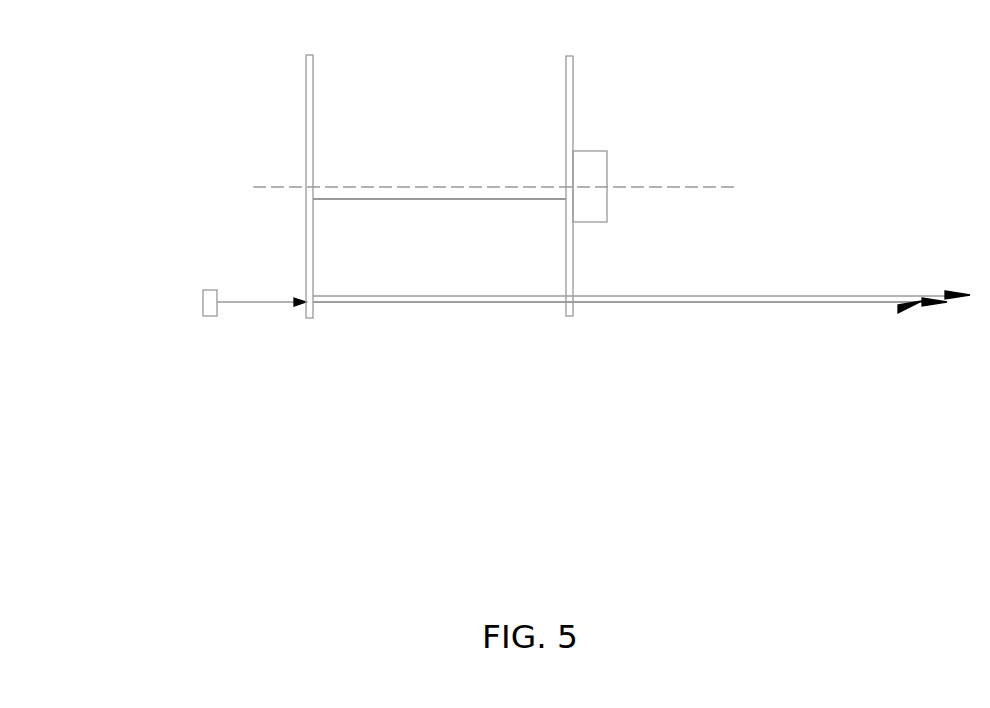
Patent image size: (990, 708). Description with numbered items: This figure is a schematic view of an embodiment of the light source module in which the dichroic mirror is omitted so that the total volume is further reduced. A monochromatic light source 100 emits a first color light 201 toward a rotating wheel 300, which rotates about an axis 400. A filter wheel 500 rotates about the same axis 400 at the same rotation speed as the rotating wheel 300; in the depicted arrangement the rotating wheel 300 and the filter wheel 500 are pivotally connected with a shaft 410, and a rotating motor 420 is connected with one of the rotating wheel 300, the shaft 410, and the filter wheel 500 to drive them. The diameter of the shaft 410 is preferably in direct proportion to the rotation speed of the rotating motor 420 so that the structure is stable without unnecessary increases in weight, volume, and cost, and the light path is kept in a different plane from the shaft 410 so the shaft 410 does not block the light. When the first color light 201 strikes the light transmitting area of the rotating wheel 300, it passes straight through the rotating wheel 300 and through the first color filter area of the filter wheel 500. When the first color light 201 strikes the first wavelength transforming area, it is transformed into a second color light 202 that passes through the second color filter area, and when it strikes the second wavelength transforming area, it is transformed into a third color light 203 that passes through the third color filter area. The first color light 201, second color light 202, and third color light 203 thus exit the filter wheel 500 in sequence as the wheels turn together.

The monochromatic light source 100 is at (203, 297).
The first color light 201 is at (268, 303).
The second color light 202 is at (492, 307).
The third color light 203 is at (433, 296).
The rotating wheel 300 is at (310, 319).
The axis 400 is at (654, 187).
The shaft 410 is at (477, 175).
The rotating motor 420 is at (597, 163).
The filter wheel 500 is at (567, 318).